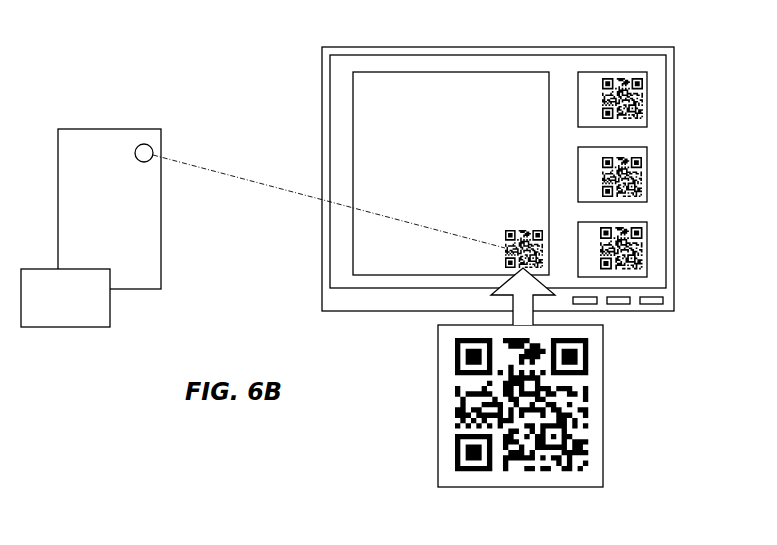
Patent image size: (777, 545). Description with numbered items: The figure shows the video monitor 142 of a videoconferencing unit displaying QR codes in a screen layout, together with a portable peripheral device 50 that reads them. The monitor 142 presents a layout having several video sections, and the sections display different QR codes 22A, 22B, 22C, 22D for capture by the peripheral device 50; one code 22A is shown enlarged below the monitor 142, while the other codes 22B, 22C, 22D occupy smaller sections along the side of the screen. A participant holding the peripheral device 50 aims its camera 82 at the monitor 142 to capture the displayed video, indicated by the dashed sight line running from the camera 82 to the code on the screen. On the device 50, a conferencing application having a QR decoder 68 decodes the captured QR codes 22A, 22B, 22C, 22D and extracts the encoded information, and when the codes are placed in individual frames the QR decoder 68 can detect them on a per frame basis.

The peripheral device 50 is at (82, 129).
The camera 82 is at (144, 145).
The QR decoder 68 is at (58, 327).
The monitor 142 is at (637, 47).
The QR code 22A is at (438, 433).
The QR code 22B is at (643, 103).
The QR code 22C is at (643, 177).
The QR code 22D is at (643, 248).